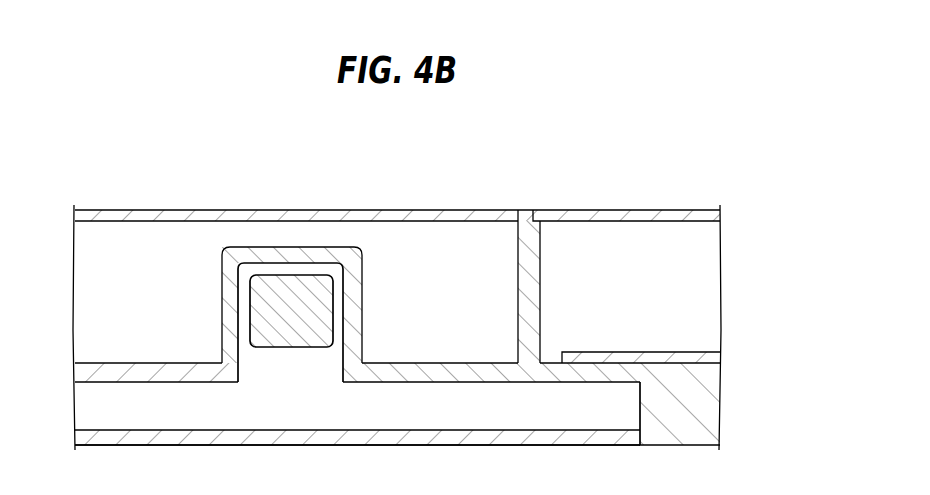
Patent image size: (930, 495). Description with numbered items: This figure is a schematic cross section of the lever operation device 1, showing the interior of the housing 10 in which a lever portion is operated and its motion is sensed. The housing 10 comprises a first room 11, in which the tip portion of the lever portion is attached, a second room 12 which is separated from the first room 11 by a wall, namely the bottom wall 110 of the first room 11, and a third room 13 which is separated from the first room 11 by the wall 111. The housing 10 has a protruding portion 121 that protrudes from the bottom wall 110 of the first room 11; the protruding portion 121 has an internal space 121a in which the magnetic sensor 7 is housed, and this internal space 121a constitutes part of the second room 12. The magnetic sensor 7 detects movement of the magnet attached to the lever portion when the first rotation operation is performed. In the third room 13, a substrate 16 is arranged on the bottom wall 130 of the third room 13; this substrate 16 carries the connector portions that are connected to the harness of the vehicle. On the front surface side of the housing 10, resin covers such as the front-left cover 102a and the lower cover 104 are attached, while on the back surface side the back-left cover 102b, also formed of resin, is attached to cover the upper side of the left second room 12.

The lever operation device 1 is at (735, 162).
The magnetic sensor 7 is at (283, 292).
The housing 10 is at (670, 425).
The first room 11 is at (456, 255).
The second room 12 is at (141, 410).
The third room 13 is at (634, 254).
The substrate 16 is at (652, 357).
The front-left cover 102a is at (414, 218).
The back-left cover 102b is at (200, 437).
The lower cover 104 is at (598, 218).
The bottom wall of the first room 110 is at (160, 373).
The wall 111 is at (529, 245).
The protruding portion 121 is at (330, 254).
The internal space 121a is at (245, 280).
The bottom wall of the third room 130 is at (550, 355).